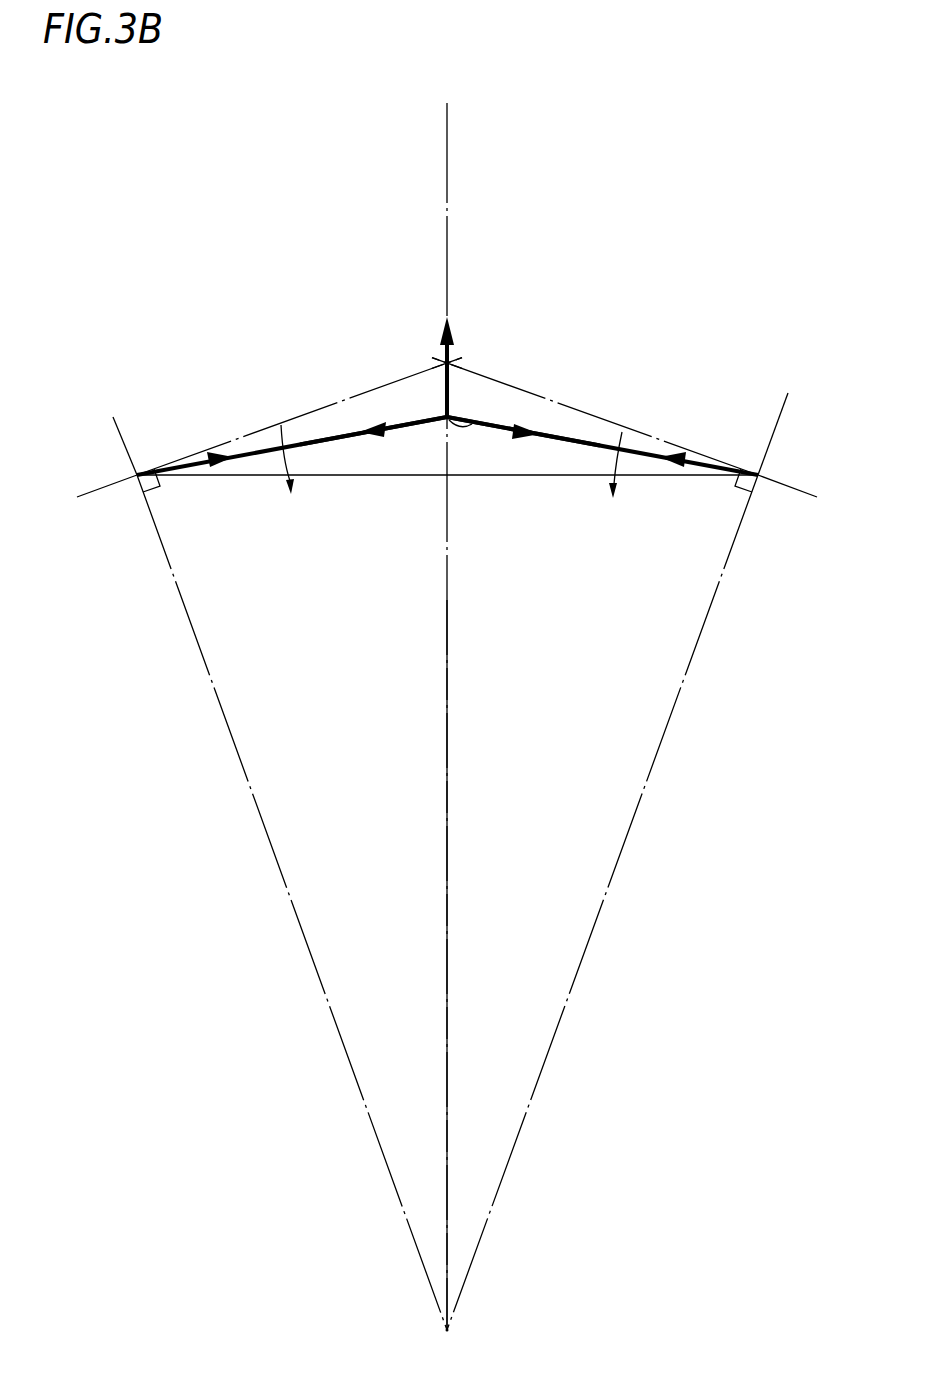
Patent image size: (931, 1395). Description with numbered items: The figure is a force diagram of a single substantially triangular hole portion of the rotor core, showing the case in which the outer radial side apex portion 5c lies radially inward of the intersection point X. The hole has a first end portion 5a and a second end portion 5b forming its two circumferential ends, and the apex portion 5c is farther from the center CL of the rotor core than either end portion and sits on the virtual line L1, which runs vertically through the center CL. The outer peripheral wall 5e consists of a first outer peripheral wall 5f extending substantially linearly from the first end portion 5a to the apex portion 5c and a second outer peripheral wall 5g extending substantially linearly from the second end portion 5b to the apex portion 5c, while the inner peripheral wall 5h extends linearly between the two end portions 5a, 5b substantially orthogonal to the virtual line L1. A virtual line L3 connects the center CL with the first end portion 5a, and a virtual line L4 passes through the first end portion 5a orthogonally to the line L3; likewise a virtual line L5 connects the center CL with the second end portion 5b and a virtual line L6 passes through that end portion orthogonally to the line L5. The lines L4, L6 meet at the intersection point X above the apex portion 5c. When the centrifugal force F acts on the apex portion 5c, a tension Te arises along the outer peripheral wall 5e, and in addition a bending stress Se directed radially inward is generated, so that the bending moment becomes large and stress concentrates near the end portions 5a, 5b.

The first end portion 5a is at (138, 487).
The second end portion 5b is at (745, 467).
The outer radial side apex portion 5c is at (483, 422).
The outer peripheral wall 5e is at (450, 431).
The first outer peripheral wall 5f is at (308, 443).
The second outer peripheral wall 5g is at (580, 440).
The inner peripheral wall 5h is at (473, 475).
The virtual line L1 is at (446, 700).
The virtual line L3 is at (272, 861).
The virtual line L4 is at (253, 434).
The virtual line L5 is at (624, 849).
The virtual line L6 is at (642, 436).
The centrifugal force F is at (442, 357).
The intersection point X is at (455, 364).
The tension Te is at (195, 462).
The bending stress Se is at (453, 479).
The center CL is at (466, 1332).